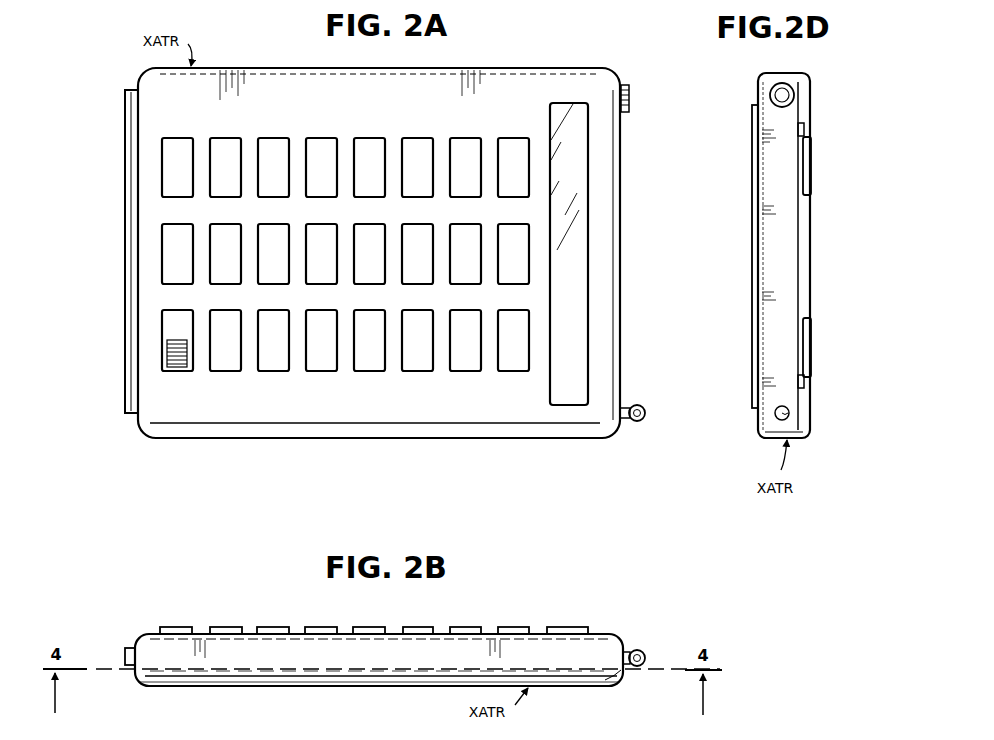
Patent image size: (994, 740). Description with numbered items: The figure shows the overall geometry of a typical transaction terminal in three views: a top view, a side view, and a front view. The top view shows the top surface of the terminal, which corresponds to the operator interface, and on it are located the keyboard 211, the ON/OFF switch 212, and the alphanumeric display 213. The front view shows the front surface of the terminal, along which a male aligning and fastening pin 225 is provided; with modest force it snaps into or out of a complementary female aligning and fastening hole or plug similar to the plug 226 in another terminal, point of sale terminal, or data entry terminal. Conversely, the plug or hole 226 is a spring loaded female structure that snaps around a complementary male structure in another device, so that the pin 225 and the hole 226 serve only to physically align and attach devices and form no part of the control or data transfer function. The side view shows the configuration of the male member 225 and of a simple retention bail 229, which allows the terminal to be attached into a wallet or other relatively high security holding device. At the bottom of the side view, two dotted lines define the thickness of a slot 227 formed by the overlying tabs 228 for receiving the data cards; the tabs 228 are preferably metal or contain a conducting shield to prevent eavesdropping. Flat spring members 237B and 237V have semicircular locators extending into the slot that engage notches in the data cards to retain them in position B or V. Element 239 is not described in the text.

In FIG. 2A, the keyboard 211 is at (157, 131).
In FIG. 2B, the keyboard 211 is at (316, 627).
In FIG. 2A, the ON/OFF switch 212 is at (166, 323).
In FIG. 2A, the alphanumeric display 213 is at (580, 222).
In FIG. 2D, the alphanumeric display 213 is at (752, 263).
In FIG. 2B, the alphanumeric display 213 is at (567, 627).
In FIG. 2A, the male aligning and fastening pin 225 is at (641, 406).
In FIG. 2D, the male aligning and fastening pin 225 is at (790, 413).
In FIG. 2B, the male aligning and fastening pin 225 is at (640, 650).
In FIG. 2A, the female aligning and fastening hole or plug 226 is at (631, 98).
In FIG. 2D, the female aligning and fastening hole or plug 226 is at (790, 92).
In FIG. 2D, the slot 227 is at (800, 253).
In FIG. 2B, the slot 227 is at (215, 677).
In FIG. 2D, the overhanging tabs 228 is at (811, 167).
In FIG. 2B, the overhanging tabs 228 is at (355, 688).
In FIG. 2A, the retention bail 229 is at (125, 193).
In FIG. 2B, the retention bail 229 is at (128, 650).
In FIG. 2D, the flat spring member 237B is at (805, 129).
In FIG. 2D, the flat spring member 237V is at (805, 380).
In FIG. 2B, the housing seam 239 is at (613, 671).